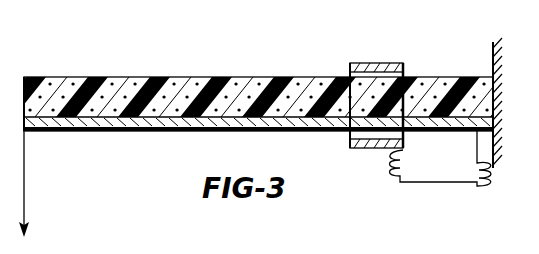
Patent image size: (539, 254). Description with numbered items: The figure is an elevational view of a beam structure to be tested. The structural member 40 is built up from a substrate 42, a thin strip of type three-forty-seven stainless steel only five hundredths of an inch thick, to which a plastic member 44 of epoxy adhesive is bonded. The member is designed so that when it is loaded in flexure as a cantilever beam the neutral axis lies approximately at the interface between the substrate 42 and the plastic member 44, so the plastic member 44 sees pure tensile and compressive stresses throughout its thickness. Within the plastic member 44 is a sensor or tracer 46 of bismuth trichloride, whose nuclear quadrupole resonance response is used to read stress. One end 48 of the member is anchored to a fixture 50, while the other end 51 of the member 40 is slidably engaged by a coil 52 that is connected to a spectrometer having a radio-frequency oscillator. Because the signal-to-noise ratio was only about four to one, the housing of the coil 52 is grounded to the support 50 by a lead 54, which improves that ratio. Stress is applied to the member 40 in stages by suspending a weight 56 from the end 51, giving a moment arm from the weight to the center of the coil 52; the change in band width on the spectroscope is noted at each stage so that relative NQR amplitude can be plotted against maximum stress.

The structural member 40 is at (258, 69).
The substrate 42 is at (439, 133).
The plastic member 44 is at (172, 78).
The sensor or tracer 46 is at (108, 80).
The one end 48 is at (479, 87).
The fixture 50 is at (498, 170).
The other end 51 is at (26, 76).
The coil 52 is at (367, 63).
The lead 54 is at (413, 182).
The weight 56 is at (27, 190).